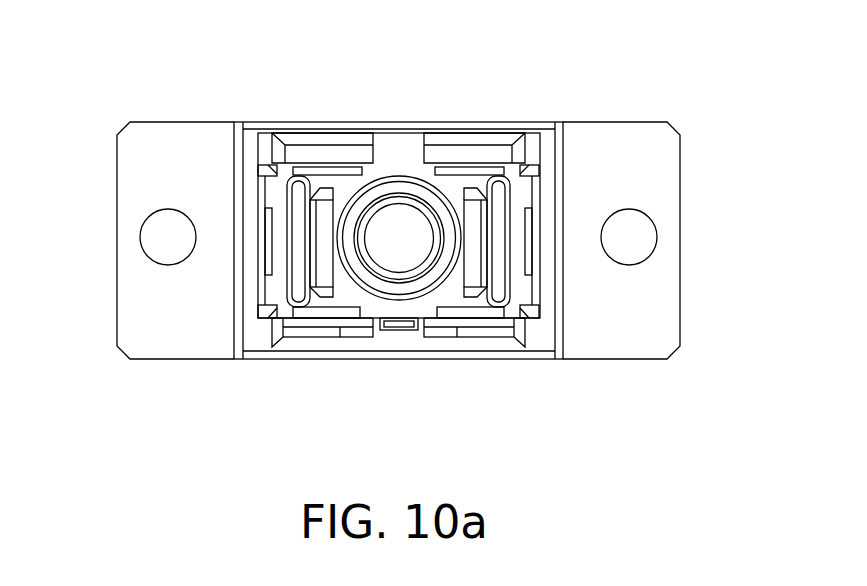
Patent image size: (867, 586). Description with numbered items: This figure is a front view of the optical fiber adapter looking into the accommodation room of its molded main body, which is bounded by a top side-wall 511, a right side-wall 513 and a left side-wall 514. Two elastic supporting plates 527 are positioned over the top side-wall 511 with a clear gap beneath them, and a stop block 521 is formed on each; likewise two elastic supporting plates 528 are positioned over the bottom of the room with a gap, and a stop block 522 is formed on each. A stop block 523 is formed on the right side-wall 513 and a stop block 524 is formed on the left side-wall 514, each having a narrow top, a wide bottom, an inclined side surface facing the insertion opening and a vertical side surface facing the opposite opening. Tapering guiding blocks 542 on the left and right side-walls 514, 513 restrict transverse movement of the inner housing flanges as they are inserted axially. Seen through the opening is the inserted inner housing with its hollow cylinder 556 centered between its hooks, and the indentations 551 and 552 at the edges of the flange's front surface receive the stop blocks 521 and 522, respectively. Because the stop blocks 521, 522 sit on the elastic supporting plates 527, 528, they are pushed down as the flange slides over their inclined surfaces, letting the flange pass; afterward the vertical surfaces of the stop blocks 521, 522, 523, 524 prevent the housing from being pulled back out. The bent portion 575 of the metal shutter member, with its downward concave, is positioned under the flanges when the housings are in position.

The top side-wall 511 is at (365, 128).
The right side-wall 513 is at (545, 147).
The left side-wall 514 is at (252, 330).
The stop block 521 is at (338, 168).
The stop block 522 is at (317, 313).
The stop block 523 is at (533, 200).
The stop block 524 is at (259, 243).
The elastic supporting plate 527 is at (300, 158).
The elastic supporting plate 528 is at (307, 320).
The guiding block 542 is at (262, 172).
The indentation 551 is at (318, 175).
The indentation 552 is at (328, 308).
The hollow cylinder 556 is at (398, 330).
The bent portion 575 is at (400, 290).